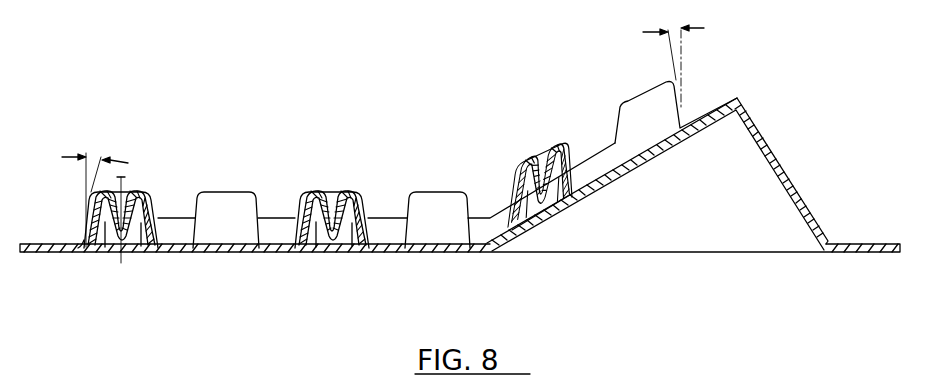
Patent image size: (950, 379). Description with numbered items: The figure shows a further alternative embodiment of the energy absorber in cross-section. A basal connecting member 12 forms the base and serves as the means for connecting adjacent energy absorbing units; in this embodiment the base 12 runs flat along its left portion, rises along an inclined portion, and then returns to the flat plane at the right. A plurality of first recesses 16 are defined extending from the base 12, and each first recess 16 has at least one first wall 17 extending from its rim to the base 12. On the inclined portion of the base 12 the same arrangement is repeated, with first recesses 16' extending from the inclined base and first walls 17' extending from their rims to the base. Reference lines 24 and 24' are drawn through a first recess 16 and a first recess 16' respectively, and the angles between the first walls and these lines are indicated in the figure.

The basal connecting member 12 is at (845, 241).
The first recess 16 is at (202, 219).
The first wall 17 is at (97, 244).
The center axis 24 is at (129, 197).
The first recess 16' is at (622, 147).
The first wall 17' is at (606, 145).
The center axis on inclined portion 24' is at (705, 67).